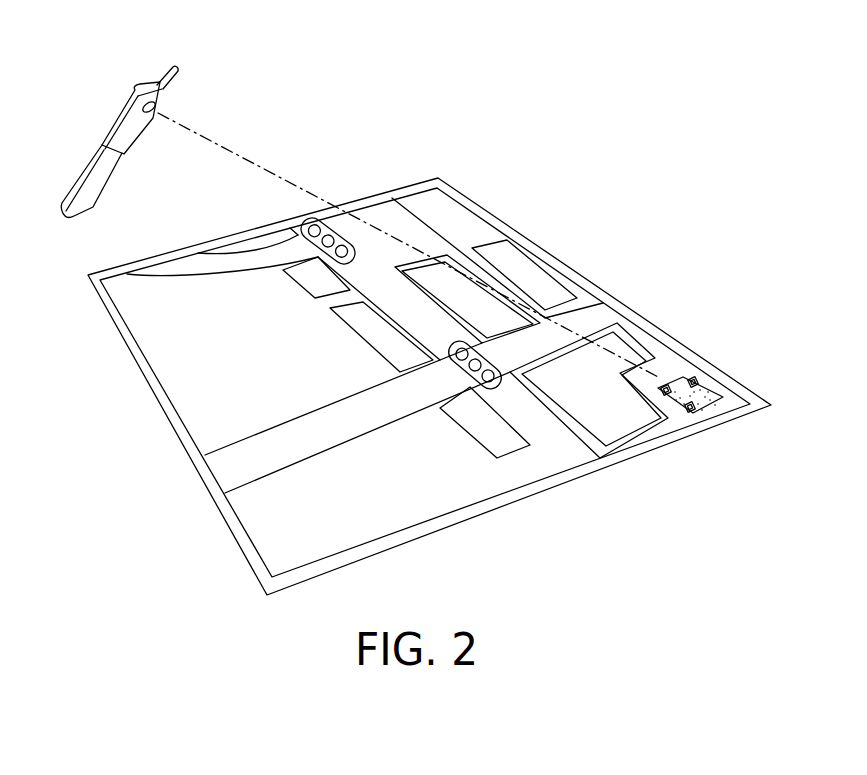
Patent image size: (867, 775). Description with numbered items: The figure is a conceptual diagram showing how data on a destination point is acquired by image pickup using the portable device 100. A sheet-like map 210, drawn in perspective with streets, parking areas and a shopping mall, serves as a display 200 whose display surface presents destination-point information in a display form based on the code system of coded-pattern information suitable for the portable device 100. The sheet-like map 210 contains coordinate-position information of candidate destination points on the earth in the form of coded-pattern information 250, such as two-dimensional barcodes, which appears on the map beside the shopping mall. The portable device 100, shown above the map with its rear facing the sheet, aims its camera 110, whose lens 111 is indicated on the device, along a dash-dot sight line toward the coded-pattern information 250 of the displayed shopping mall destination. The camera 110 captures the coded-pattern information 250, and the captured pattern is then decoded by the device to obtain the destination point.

The portable device 100 is at (122, 83).
The camera 110 is at (217, 99).
The lens 111 is at (155, 110).
The display 200 is at (652, 312).
The sheet-like map 210 is at (600, 312).
The coded-pattern information 250 is at (693, 377).